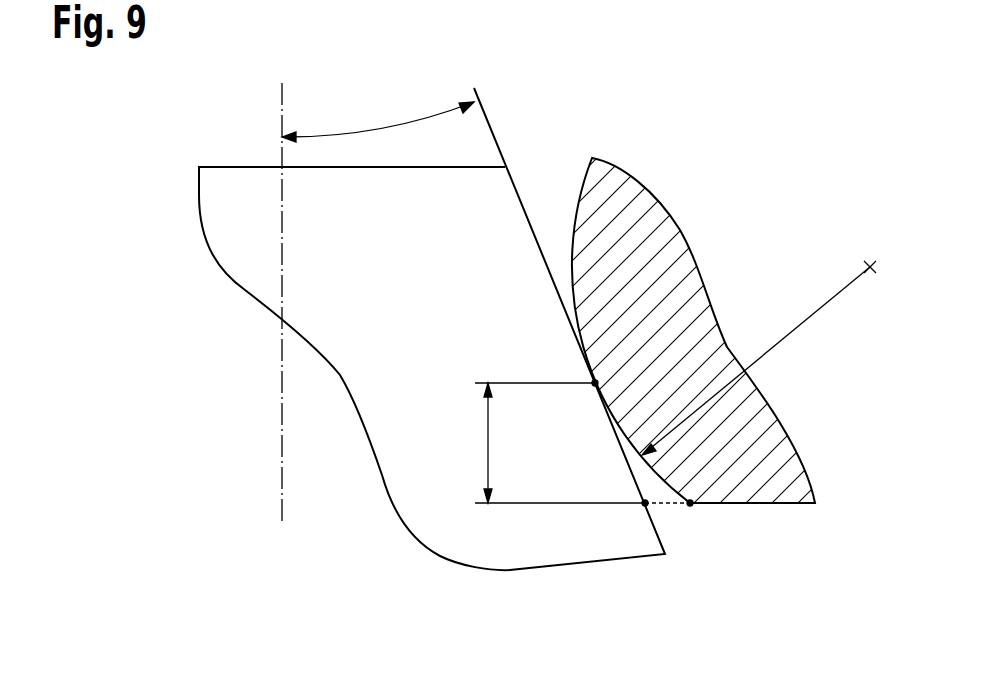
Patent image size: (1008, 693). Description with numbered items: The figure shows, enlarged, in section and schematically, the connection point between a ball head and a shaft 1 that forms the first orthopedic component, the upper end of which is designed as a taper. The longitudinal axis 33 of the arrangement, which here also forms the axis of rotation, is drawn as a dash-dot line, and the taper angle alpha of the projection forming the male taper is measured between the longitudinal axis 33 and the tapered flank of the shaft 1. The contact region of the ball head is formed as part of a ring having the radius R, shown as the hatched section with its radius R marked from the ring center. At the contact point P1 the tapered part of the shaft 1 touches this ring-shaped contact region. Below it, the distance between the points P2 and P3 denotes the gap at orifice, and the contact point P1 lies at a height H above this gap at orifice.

The shaft 1 is at (217, 287).
The longitudinal axis 33 is at (280, 91).
The contact point P1 is at (593, 383).
The gap at orifice end point P2 is at (690, 504).
The gap at orifice end point P3 is at (645, 504).
The height H is at (576, 443).
The radius R is at (759, 358).
The taper angle alpha is at (378, 118).